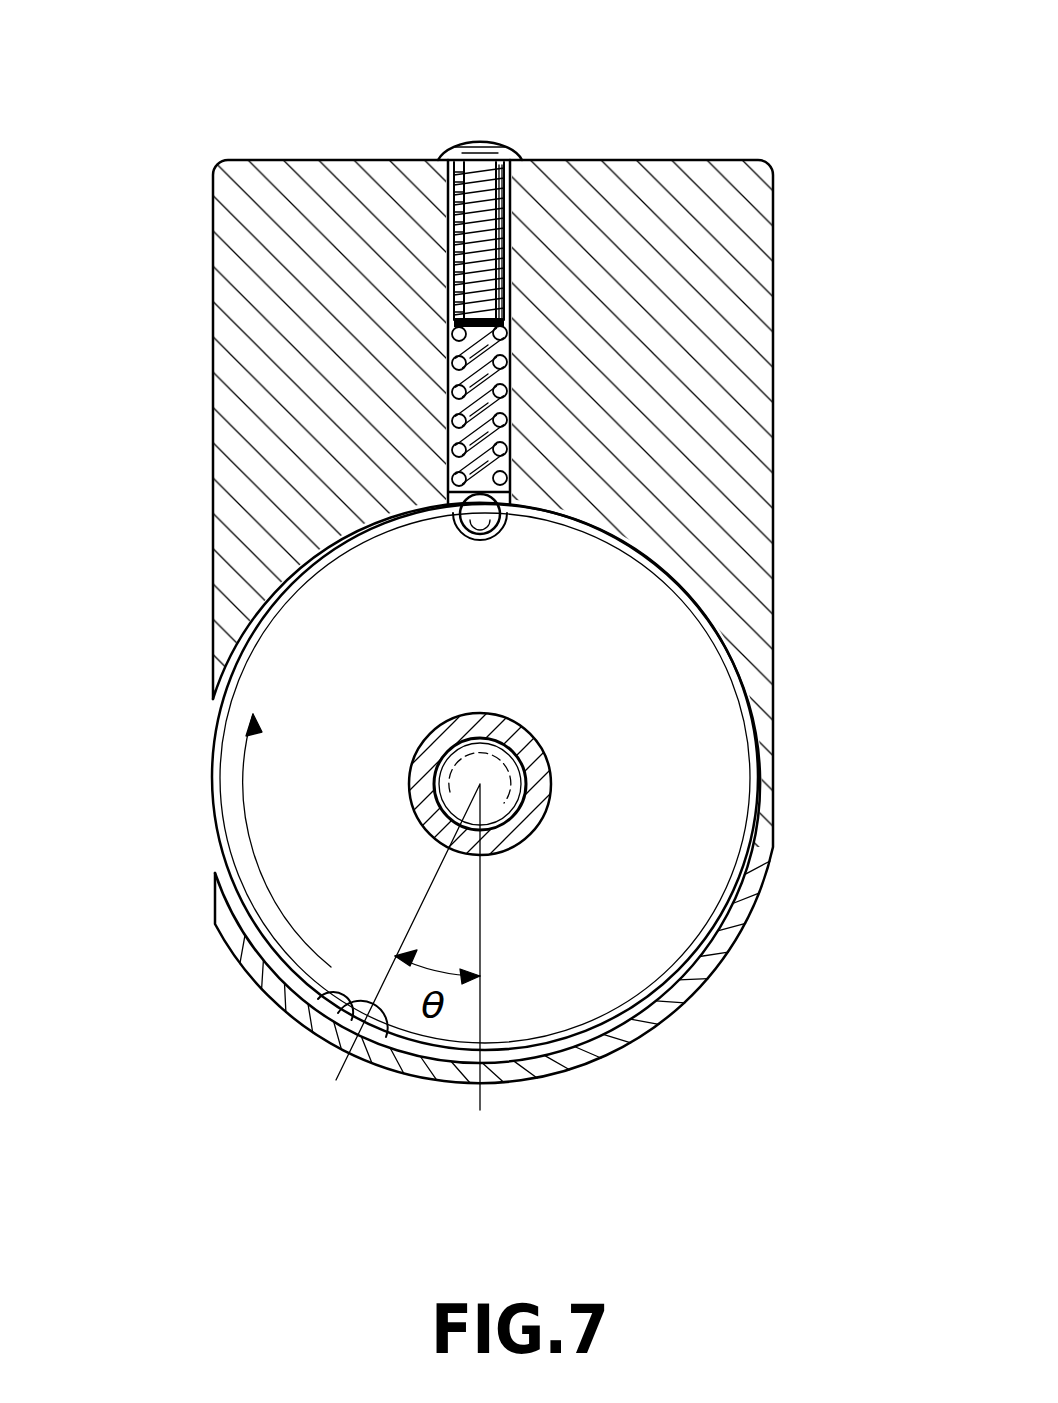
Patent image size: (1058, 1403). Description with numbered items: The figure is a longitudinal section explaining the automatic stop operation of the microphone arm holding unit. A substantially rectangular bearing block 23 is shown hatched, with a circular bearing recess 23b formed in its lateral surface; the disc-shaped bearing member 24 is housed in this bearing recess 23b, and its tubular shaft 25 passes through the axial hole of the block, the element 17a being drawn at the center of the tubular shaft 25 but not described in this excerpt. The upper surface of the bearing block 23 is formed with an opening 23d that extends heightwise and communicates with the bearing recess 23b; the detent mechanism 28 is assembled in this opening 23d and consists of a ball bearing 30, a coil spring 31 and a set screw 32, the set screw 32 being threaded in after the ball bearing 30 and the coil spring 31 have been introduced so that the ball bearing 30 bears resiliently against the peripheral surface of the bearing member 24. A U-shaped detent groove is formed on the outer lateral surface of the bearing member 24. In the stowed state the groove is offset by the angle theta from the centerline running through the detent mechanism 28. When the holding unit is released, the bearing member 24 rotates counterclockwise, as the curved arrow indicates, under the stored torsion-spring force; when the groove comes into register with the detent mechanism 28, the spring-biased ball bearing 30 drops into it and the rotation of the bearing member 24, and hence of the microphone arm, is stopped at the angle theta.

The rotary shaft 17a is at (512, 803).
The bearing block 23 is at (740, 333).
The bearing recess 23b is at (317, 557).
The opening for detent mechanism 23d is at (447, 273).
The bearing member 24 is at (680, 688).
The tubular shaft 25 is at (545, 778).
The detent mechanism 28 is at (748, 78).
The ball bearing 30 is at (510, 497).
The coil spring 31 is at (512, 338).
The set screw 32 is at (497, 152).